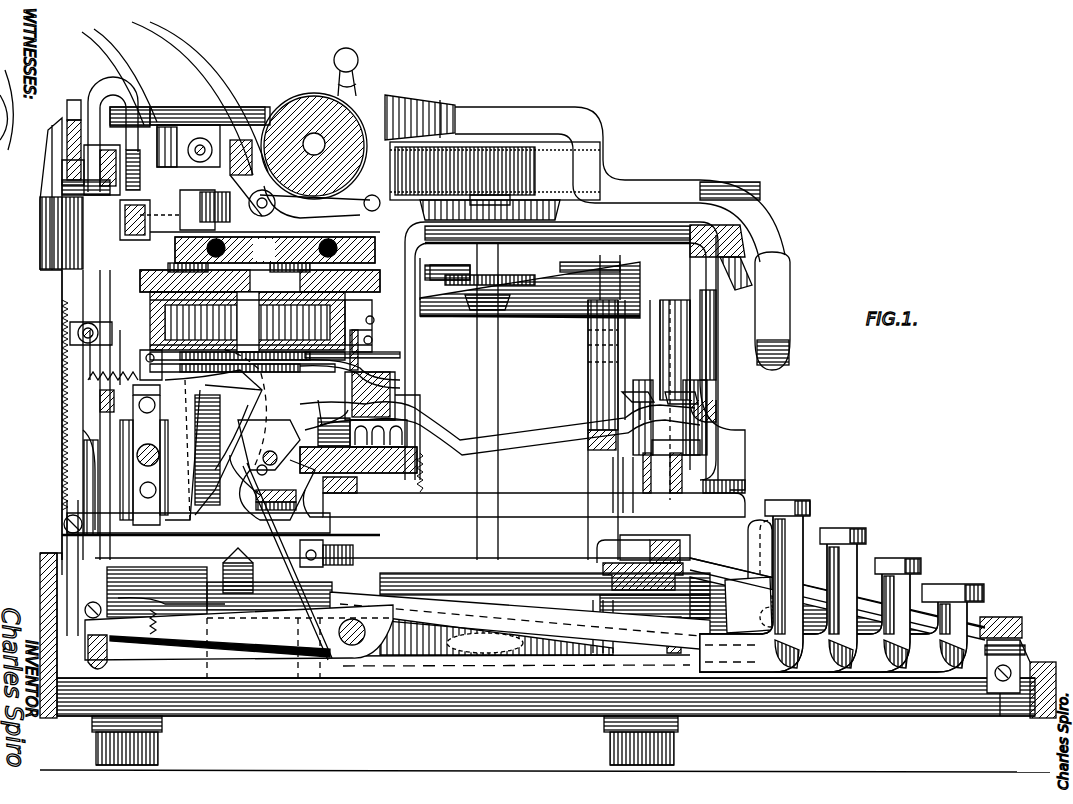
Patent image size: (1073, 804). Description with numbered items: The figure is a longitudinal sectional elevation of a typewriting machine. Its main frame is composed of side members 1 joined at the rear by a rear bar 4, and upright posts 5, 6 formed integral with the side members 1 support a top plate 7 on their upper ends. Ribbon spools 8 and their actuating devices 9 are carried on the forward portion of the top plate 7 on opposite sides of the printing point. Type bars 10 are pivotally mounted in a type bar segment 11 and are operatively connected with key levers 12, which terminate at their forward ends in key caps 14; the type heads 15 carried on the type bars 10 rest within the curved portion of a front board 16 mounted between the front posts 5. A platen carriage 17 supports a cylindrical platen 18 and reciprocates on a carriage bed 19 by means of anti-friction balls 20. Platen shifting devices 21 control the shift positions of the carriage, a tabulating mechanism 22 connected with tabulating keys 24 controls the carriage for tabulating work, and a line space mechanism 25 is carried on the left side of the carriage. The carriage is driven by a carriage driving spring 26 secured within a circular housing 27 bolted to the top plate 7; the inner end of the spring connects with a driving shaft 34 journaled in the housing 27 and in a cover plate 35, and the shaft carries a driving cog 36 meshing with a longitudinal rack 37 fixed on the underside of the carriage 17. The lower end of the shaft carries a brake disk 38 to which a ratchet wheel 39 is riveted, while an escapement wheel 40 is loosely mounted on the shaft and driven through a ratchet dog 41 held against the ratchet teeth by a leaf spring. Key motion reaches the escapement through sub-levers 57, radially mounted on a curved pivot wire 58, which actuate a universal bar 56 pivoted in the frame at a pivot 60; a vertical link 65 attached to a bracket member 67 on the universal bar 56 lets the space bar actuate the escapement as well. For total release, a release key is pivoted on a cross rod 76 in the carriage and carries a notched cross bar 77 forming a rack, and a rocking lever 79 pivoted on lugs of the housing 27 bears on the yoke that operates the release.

The side members 1 is at (548, 578).
The rear bar 4 is at (33, 635).
The upright post 5 is at (632, 468).
The upright post 6 is at (162, 478).
The top plate 7 is at (742, 284).
The ribbon spools 8 is at (562, 150).
The actuating devices 9 is at (546, 284).
The type bars 10 is at (530, 436).
The type bar segment 11 is at (420, 455).
The key levers 12 is at (490, 672).
The key caps 14 is at (800, 510).
The type heads 15 is at (653, 384).
The front board 16 is at (712, 394).
The platen carriage 17 is at (272, 128).
The cylindrical platen 18 is at (336, 76).
The carriage bed 19 is at (275, 250).
The anti-friction balls 20 is at (232, 243).
The platen shifting devices 21 is at (66, 170).
The tabulating mechanism 22 is at (96, 94).
The tabulating keys 24 is at (528, 500).
The line space mechanism 25 is at (511, 110).
The carriage driving spring 26 is at (172, 360).
The circular housing 27 is at (163, 410).
The driving shaft 34 is at (247, 321).
The cover plate 35 is at (348, 338).
The driving cog 36 is at (288, 272).
The longitudinal rack 37 is at (254, 204).
The brake disk 38 is at (400, 360).
The ratchet wheel 39 is at (325, 368).
The escapement wheel 40 is at (218, 372).
The ratchet dog 41 is at (210, 358).
The universal bar 56 is at (257, 486).
The sub-levers 57 is at (278, 454).
The curved pivot wire 58 is at (245, 405).
The universal bar pivot 60 is at (227, 589).
The vertical link 65 is at (378, 556).
The bracket member 67 is at (416, 582).
The cross rod 76 is at (190, 124).
The cross bar 77 is at (60, 280).
The rocking lever 79 is at (62, 314).